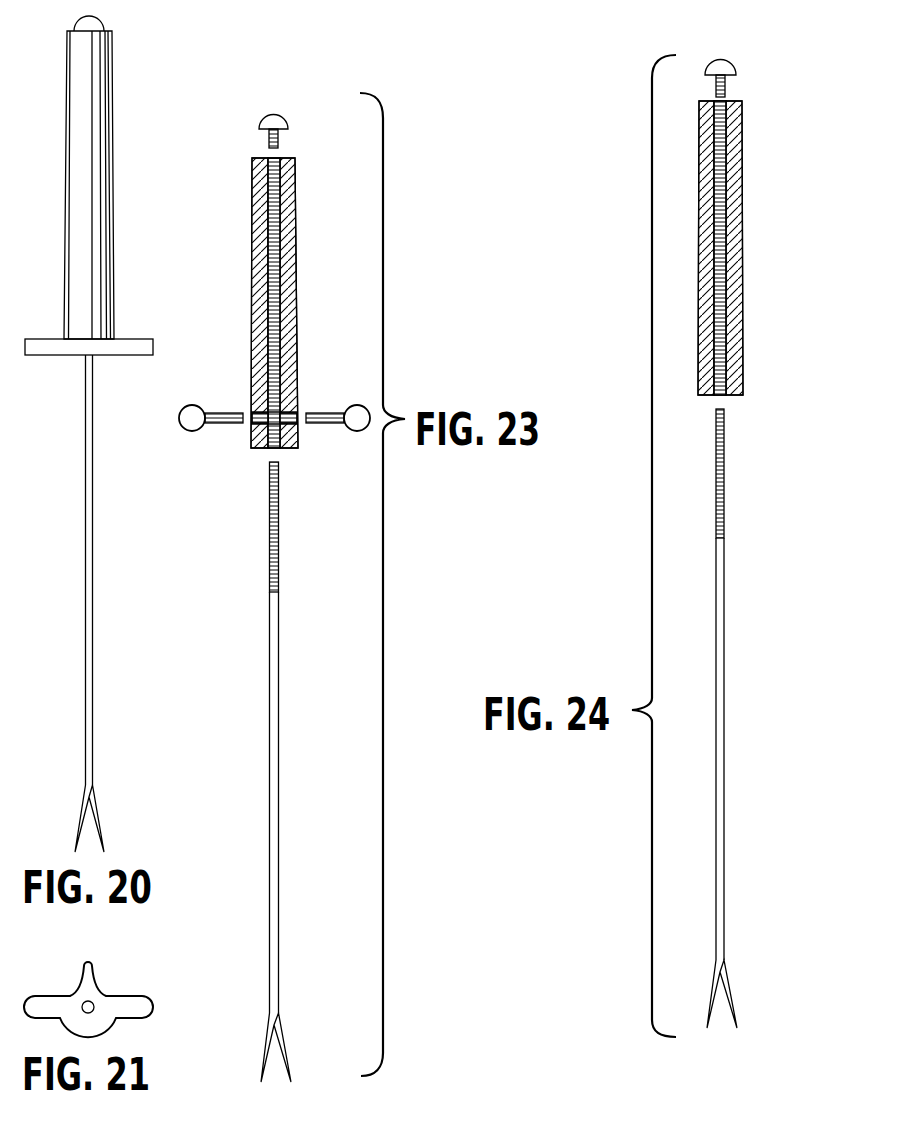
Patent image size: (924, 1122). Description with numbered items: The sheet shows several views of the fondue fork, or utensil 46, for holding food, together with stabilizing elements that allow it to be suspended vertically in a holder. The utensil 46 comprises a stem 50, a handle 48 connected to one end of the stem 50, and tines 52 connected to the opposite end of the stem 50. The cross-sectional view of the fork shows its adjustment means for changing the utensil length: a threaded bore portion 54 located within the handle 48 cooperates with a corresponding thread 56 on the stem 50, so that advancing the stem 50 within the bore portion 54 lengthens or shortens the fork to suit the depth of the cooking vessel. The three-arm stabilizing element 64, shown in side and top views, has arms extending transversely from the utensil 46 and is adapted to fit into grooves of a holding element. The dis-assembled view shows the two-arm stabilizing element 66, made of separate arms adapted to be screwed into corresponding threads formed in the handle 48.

In FIG. 24, the utensil 46 is at (742, 101).
In FIG. 24, the handle 48 is at (744, 326).
In FIG. 24, the stem 50 is at (726, 672).
In FIG. 24, the tines 52 is at (729, 980).
In FIG. 24, the bore portion 54 is at (724, 222).
In FIG. 24, the thread 56 is at (726, 432).
In FIG. 20, the three-arm stabilizing element 64 is at (38, 356).
In FIG. 21, the three-arm stabilizing element 64 is at (118, 1005).
In FIG. 23, the two-arm stabilizing element 66 is at (188, 431).